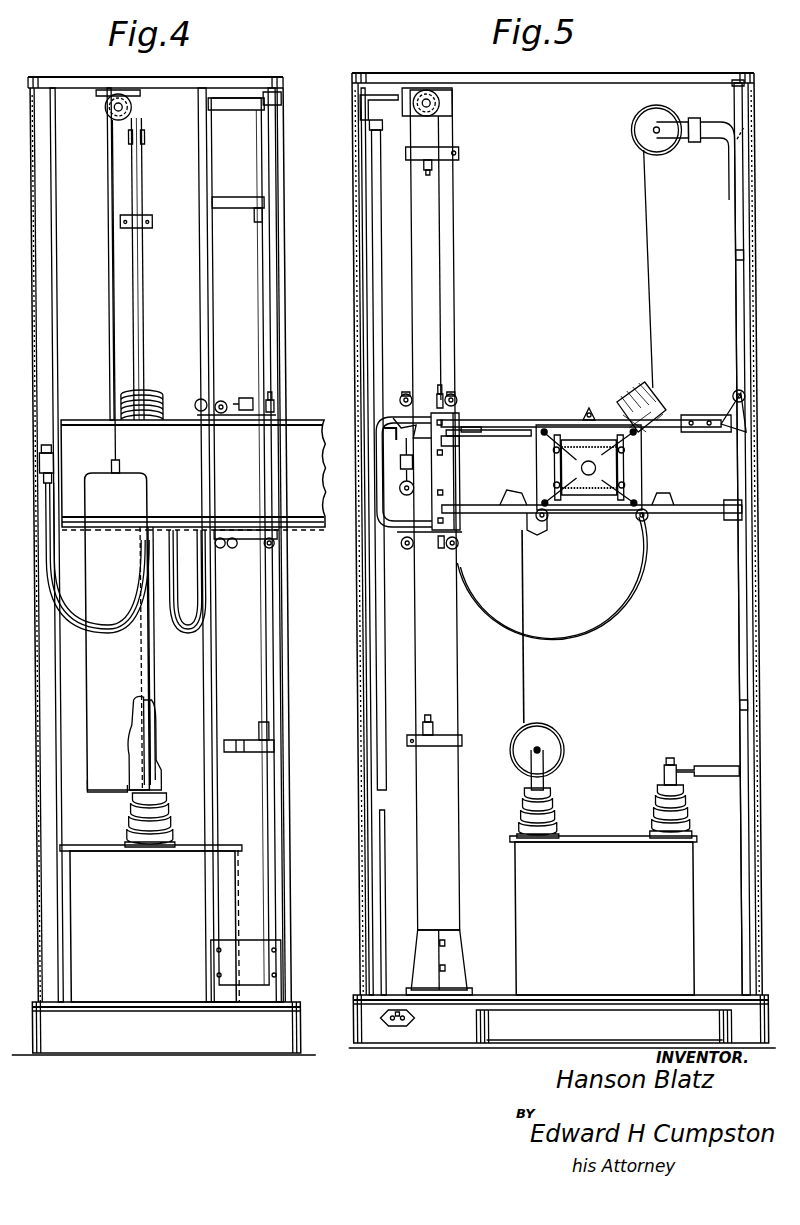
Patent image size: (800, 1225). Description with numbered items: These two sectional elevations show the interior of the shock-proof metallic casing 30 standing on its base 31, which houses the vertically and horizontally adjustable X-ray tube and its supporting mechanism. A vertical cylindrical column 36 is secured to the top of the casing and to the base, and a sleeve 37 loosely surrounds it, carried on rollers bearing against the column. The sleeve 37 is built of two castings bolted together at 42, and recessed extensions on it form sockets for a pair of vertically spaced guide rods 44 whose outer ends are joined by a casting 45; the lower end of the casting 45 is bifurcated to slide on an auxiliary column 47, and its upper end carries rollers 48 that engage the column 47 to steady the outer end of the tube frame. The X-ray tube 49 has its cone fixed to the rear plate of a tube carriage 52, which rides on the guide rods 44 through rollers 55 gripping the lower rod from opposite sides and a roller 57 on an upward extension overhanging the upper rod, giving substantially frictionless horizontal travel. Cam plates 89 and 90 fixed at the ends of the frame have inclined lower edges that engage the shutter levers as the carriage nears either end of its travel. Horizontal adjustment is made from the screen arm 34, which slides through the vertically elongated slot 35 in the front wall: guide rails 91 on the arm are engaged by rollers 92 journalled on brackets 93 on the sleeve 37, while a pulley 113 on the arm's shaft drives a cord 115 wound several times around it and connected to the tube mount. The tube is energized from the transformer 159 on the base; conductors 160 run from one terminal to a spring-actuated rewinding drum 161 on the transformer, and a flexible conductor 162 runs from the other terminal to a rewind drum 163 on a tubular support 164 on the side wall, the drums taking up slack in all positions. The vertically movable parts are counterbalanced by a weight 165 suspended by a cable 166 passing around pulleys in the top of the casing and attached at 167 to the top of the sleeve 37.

In FIG. 4, the casing 30 is at (59, 79).
In FIG. 5, the casing 30 is at (491, 79).
In FIG. 4, the base 31 is at (131, 1042).
In FIG. 5, the base 31 is at (389, 1042).
In FIG. 4, the arm 34 is at (318, 455).
In FIG. 4, the slot 35 is at (283, 268).
In FIG. 4, the column 36 is at (260, 315).
In FIG. 5, the column 36 is at (449, 673).
In FIG. 5, the sleeve 37 is at (450, 493).
In FIG. 5, the bolted joint 42 is at (450, 458).
In FIG. 5, the guide rods 44 is at (527, 412).
In FIG. 5, the casting 45 is at (738, 471).
In FIG. 4, the auxiliary column 47 is at (203, 328).
In FIG. 5, the auxiliary column 47 is at (738, 262).
In FIG. 5, the rollers 48 is at (732, 396).
In FIG. 4, the X-ray tube 49 is at (153, 394).
In FIG. 5, the X-ray tube 49 is at (560, 530).
In FIG. 5, the tube carriage 52 is at (647, 472).
In FIG. 5, the rollers 55 is at (535, 518).
In FIG. 5, the roller 57 is at (586, 414).
In FIG. 5, the cam plate 89 is at (500, 432).
In FIG. 5, the cam plate 90 is at (661, 426).
In FIG. 5, the guide rail 91 is at (404, 413).
In FIG. 5, the rollers 92 is at (378, 430).
In FIG. 5, the brackets 93 is at (413, 447).
In FIG. 4, the pulley 113 is at (323, 490).
In FIG. 5, the cord 115 is at (500, 505).
In FIG. 4, the transformer 159 is at (110, 863).
In FIG. 5, the transformer 159 is at (581, 830).
In FIG. 4, the conductors 160 is at (146, 713).
In FIG. 5, the conductors 160 is at (535, 577).
In FIG. 4, the rewinding drum 161 is at (150, 745).
In FIG. 5, the rewinding drum 161 is at (565, 733).
In FIG. 4, the flexible conductor 162 is at (142, 297).
In FIG. 5, the flexible conductor 162 is at (644, 242).
In FIG. 4, the rewind drum 163 is at (142, 160).
In FIG. 5, the rewind drum 163 is at (646, 116).
In FIG. 5, the tubular support 164 is at (716, 136).
In FIG. 4, the weight 165 is at (96, 787).
In FIG. 5, the weight 165 is at (372, 688).
In FIG. 4, the cable 166 is at (107, 180).
In FIG. 5, the cable 166 is at (378, 366).
In FIG. 4, the attachment 167 is at (272, 405).
In FIG. 5, the attachment 167 is at (430, 392).